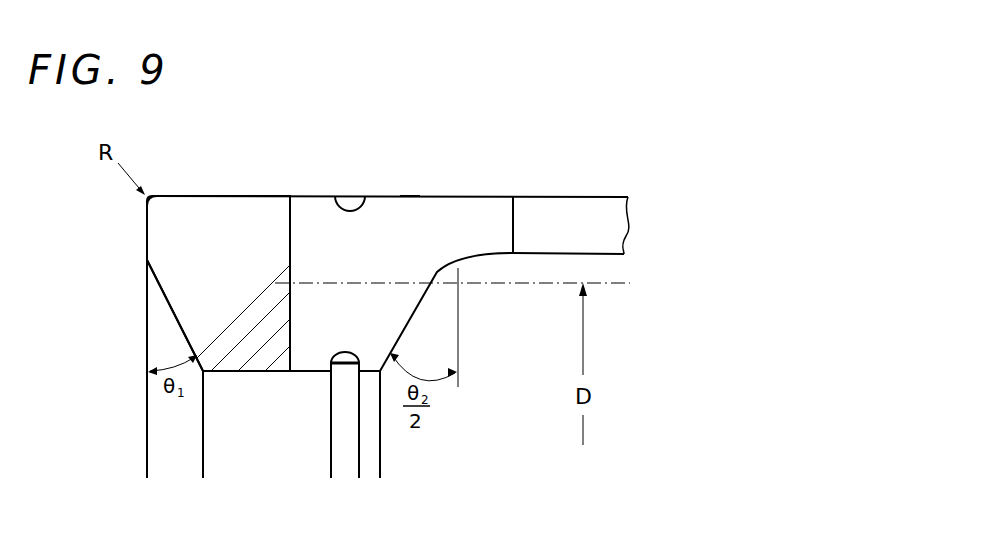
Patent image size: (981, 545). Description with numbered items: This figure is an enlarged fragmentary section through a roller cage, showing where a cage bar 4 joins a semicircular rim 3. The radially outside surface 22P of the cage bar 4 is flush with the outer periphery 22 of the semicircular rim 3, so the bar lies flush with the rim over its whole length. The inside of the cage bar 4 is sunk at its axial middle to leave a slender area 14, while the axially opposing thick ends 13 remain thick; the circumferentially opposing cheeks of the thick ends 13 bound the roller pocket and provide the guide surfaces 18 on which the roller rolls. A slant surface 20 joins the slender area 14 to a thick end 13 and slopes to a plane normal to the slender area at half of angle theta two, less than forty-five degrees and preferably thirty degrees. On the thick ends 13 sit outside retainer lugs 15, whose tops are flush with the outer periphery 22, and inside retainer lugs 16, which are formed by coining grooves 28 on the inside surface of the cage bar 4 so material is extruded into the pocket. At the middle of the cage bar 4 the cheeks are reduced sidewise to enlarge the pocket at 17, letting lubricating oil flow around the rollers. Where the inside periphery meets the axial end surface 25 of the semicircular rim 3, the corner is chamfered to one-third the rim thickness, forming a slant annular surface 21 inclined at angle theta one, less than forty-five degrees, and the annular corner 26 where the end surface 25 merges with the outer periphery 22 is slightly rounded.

The semicircular rim 3 is at (210, 245).
The cage bar 4 is at (437, 215).
The thick ends 13 is at (313, 233).
The slender area 14 is at (493, 216).
The outside retainer lugs 15 is at (348, 205).
The inside retainer lugs 16 is at (345, 355).
The widthwise enlargement of the pocket 17 is at (585, 218).
The guide surfaces 18 is at (390, 270).
The slant surface 20 is at (410, 318).
The slant annular surface 21 is at (172, 323).
The outer periphery 22 is at (228, 196).
The radially outside surface 22P is at (410, 196).
The axial end surface 25 is at (147, 232).
The annular corner 26 is at (152, 196).
The grooves 28 is at (340, 445).